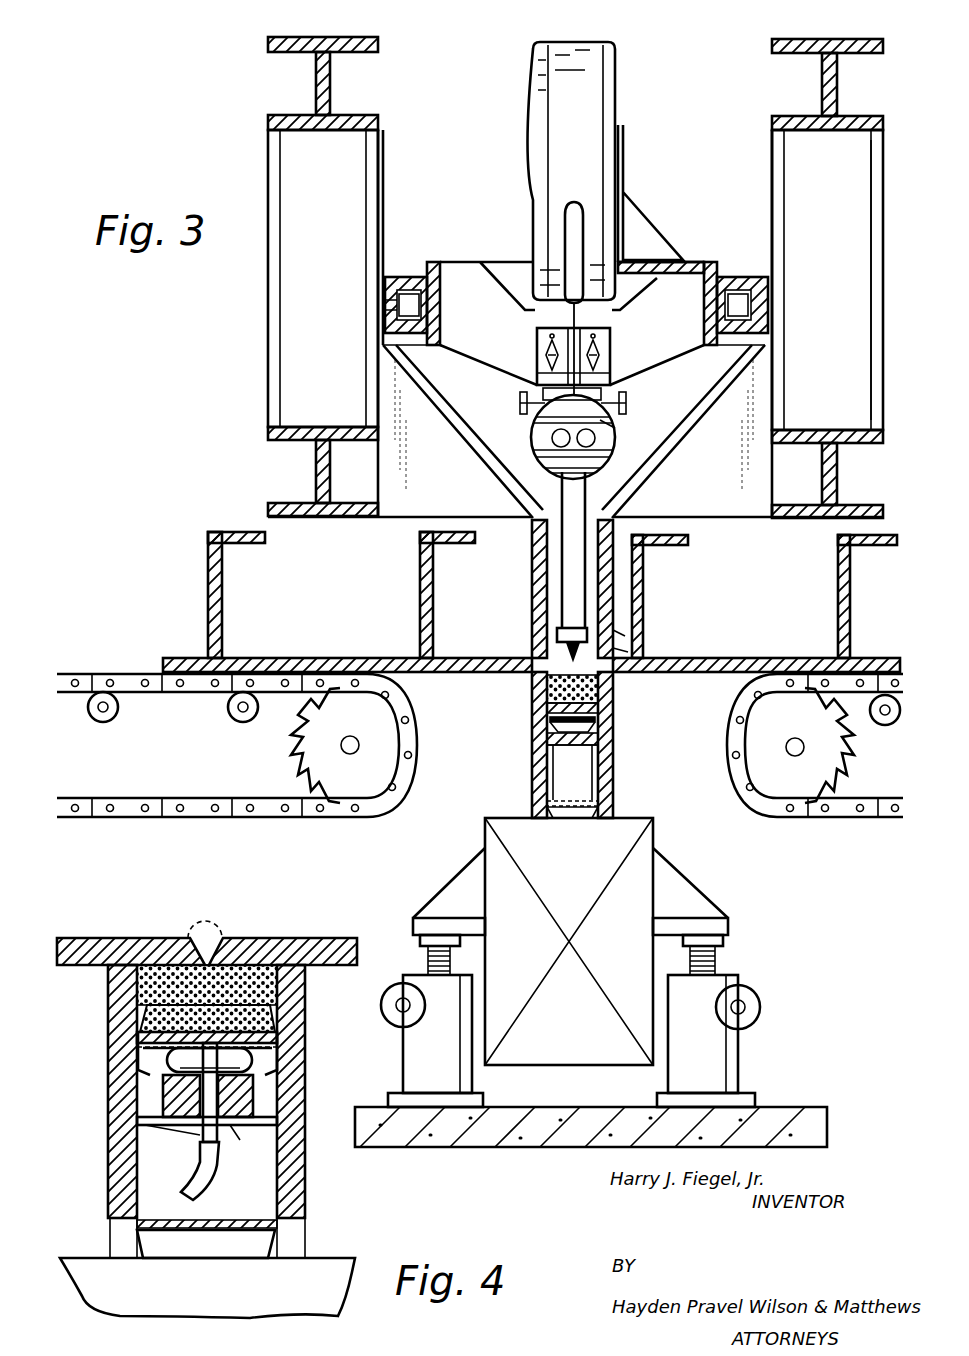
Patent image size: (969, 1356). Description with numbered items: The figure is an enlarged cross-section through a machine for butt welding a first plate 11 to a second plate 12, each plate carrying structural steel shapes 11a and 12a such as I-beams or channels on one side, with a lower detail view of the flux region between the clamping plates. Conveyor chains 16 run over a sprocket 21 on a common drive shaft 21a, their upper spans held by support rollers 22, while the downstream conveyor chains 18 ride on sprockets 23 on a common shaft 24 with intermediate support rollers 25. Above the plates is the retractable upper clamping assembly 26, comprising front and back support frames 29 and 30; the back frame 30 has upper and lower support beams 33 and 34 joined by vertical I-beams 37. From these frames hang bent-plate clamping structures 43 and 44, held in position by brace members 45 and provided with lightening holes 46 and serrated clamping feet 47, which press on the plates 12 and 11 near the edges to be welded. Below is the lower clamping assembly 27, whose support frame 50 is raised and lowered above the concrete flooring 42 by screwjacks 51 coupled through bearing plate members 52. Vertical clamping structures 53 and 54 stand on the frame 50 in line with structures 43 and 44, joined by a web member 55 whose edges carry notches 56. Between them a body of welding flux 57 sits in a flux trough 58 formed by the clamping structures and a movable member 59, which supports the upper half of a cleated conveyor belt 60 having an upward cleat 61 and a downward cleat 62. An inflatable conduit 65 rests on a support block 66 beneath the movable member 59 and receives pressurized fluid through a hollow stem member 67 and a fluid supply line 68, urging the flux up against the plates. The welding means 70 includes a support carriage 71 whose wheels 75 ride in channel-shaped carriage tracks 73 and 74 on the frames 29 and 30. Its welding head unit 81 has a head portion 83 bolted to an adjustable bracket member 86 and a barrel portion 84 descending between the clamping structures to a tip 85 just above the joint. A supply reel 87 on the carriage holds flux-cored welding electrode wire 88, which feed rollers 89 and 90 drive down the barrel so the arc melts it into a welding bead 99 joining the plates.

In FIG. 3, the first plate 11 is at (750, 658).
In FIG. 4, the first plate 11 is at (315, 938).
In FIG. 3, the structural steel shapes 11a is at (645, 585).
In FIG. 3, the second plate 12 is at (272, 658).
In FIG. 4, the second plate 12 is at (78, 938).
In FIG. 3, the structural steel shapes 12a is at (208, 570).
In FIG. 3, the conveyor chains 16 is at (155, 695).
In FIG. 3, the conveyor chains 18 is at (862, 818).
In FIG. 3, the sprocket 21 is at (285, 740).
In FIG. 3, the drive shaft 21a is at (348, 754).
In FIG. 3, the support rollers 22 is at (100, 722).
In FIG. 3, the sprockets 23 is at (856, 776).
In FIG. 3, the common shaft 24 is at (793, 757).
In FIG. 3, the intermediate support rollers 25 is at (885, 726).
In FIG. 3, the upper clamping assembly 26 is at (262, 362).
In FIG. 3, the lower clamping assembly 27 is at (445, 832).
In FIG. 3, the support frame 29 is at (380, 147).
In FIG. 3, the support frame 30 is at (770, 150).
In FIG. 3, the upper support beam 33 is at (822, 98).
In FIG. 3, the lower support beam 34 is at (836, 472).
In FIG. 3, the vertical I-beams 37 is at (870, 192).
In FIG. 3, the concrete flooring 42 is at (795, 1107).
In FIG. 3, the clamping structure 43 is at (533, 581).
In FIG. 3, the clamping structure 44 is at (645, 562).
In FIG. 3, the brace members 45 is at (397, 520).
In FIG. 3, the lightening holes 46 is at (614, 636).
In FIG. 3, the clamping feet 47 is at (614, 650).
In FIG. 3, the support frame 50 is at (655, 830).
In FIG. 4, the support frame 50 is at (325, 1258).
In FIG. 3, the screwjacks 51 is at (450, 1060).
In FIG. 3, the bearing plate members 52 is at (410, 920).
In FIG. 3, the clamping structure 53 is at (534, 777).
In FIG. 4, the clamping structure 53 is at (120, 1188).
In FIG. 3, the clamping structure 54 is at (612, 757).
In FIG. 4, the clamping structure 54 is at (305, 1200).
In FIG. 3, the web member 55 is at (548, 750).
In FIG. 4, the web member 55 is at (204, 1139).
In FIG. 3, the notches 56 is at (548, 740).
In FIG. 4, the notches 56 is at (140, 1121).
In FIG. 3, the welding flux 57 is at (548, 690).
In FIG. 4, the welding flux 57 is at (160, 985).
In FIG. 4, the flux trough 58 is at (240, 975).
In FIG. 4, the movable member 59 is at (140, 1056).
In FIG. 4, the conveyor belt 60 is at (140, 1037).
In FIG. 4, the cleat 61 is at (145, 1015).
In FIG. 4, the cleat 62 is at (137, 1245).
In FIG. 4, the inflatable conduit 65 is at (170, 1070).
In FIG. 4, the support block 66 is at (165, 1100).
In FIG. 4, the hollow stem member 67 is at (203, 1136).
In FIG. 4, the fluid supply line 68 is at (216, 1172).
In FIG. 3, the welding means 70 is at (512, 335).
In FIG. 3, the support carriage 71 is at (462, 262).
In FIG. 3, the carriage track 73 is at (407, 277).
In FIG. 3, the carriage track 74 is at (745, 277).
In FIG. 3, the wheels 75 is at (420, 310).
In FIG. 3, the welding head unit 81 is at (531, 431).
In FIG. 3, the head portion 83 is at (617, 430).
In FIG. 3, the barrel portion 84 is at (560, 555).
In FIG. 3, the lower end 85 is at (557, 635).
In FIG. 3, the bracket member 86 is at (612, 340).
In FIG. 3, the supply reel 87 is at (600, 92).
In FIG. 3, the welding electrode wire 88 is at (578, 330).
In FIG. 3, the feed roller 89 is at (552, 441).
In FIG. 3, the feed roller 90 is at (595, 441).
In FIG. 4, the welding bead 99 is at (200, 920).